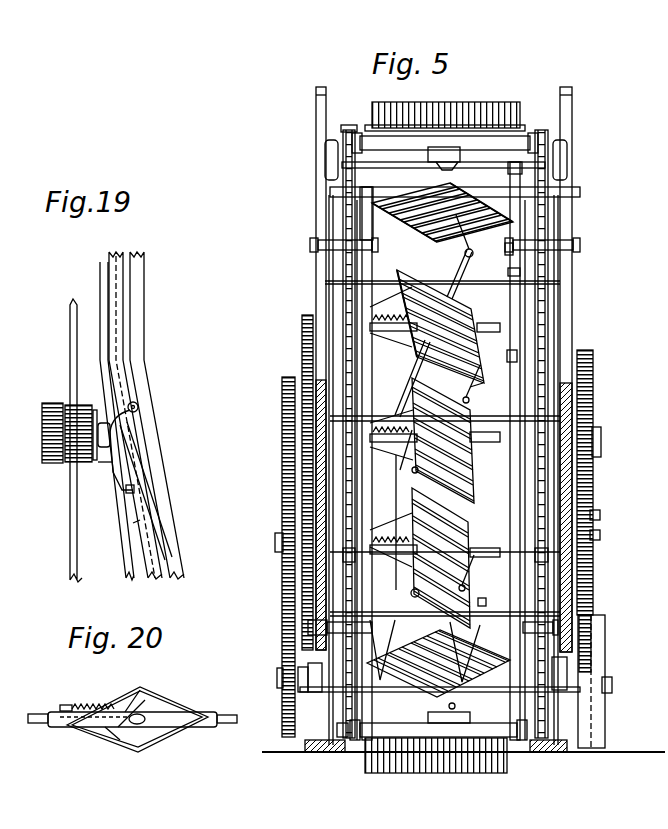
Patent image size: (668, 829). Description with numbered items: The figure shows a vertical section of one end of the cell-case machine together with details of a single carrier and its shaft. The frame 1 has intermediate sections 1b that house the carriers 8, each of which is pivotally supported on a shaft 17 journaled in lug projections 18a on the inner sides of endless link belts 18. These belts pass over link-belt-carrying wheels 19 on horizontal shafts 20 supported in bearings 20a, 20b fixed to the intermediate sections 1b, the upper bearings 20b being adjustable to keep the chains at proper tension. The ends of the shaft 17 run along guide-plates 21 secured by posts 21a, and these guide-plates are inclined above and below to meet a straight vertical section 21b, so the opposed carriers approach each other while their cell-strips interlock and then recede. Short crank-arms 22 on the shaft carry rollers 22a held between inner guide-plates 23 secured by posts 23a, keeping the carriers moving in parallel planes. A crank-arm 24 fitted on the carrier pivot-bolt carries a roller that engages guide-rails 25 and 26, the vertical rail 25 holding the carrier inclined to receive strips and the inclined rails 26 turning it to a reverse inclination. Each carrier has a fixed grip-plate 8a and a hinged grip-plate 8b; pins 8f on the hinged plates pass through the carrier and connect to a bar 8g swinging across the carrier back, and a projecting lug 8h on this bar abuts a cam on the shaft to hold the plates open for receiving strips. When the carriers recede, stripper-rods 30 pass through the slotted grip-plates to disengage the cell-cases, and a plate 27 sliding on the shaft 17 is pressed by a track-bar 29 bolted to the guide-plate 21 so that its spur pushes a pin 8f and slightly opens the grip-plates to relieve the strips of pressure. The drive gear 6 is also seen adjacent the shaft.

In FIG. 5, the frame 1 is at (463, 457).
In FIG. 5, the intermediate section 1b is at (583, 193).
In FIG. 19, the drive gear 6 is at (52, 422).
In FIG. 5, the carrier 8 is at (478, 312).
In FIG. 19, the carrier 8 is at (87, 423).
In FIG. 20, the carrier 8 is at (137, 713).
In FIG. 5, the grip-plate 8a is at (386, 104).
In FIG. 5, the hinged grip-plate 8b is at (378, 108).
In FIG. 20, the pin 8f is at (137, 692).
In FIG. 20, the bar 8g is at (120, 740).
In FIG. 20, the projecting lug 8h is at (146, 698).
In FIG. 5, the shaft 17 is at (376, 730).
In FIG. 20, the shaft 17 is at (216, 712).
In FIG. 5, the endless link belt 18 is at (342, 205).
In FIG. 5, the lug projection 18a is at (357, 560).
In FIG. 5, the link-belt-carrying wheel 19 is at (540, 128).
In FIG. 5, the horizontal shaft 20 is at (612, 688).
In FIG. 5, the bearing 20a is at (586, 693).
In FIG. 5, the upper bearing 20b is at (318, 187).
In FIG. 5, the guide-plate 21 is at (372, 262).
In FIG. 19, the guide-plate 21 is at (108, 268).
In FIG. 5, the post 21a is at (618, 611).
In FIG. 19, the post 21a is at (123, 525).
In FIG. 19, the straight vertical section 21b is at (103, 300).
In FIG. 5, the crank-arm 22 is at (485, 200).
In FIG. 19, the crank-arm 22 is at (140, 385).
In FIG. 5, the roller 22a is at (522, 352).
In FIG. 19, the roller 22a is at (139, 405).
In FIG. 5, the guide-plate 23 is at (508, 272).
In FIG. 19, the guide-plate 23 is at (135, 445).
In FIG. 5, the post 23a is at (493, 599).
In FIG. 5, the crank-arm 24 is at (473, 253).
In FIG. 5, the guide-rail 25 is at (411, 599).
In FIG. 5, the inclined rail 26 is at (455, 252).
In FIG. 20, the plate 27 is at (75, 705).
In FIG. 19, the track-bar 29 is at (125, 470).
In FIG. 5, the stripper-rod 30 is at (384, 522).